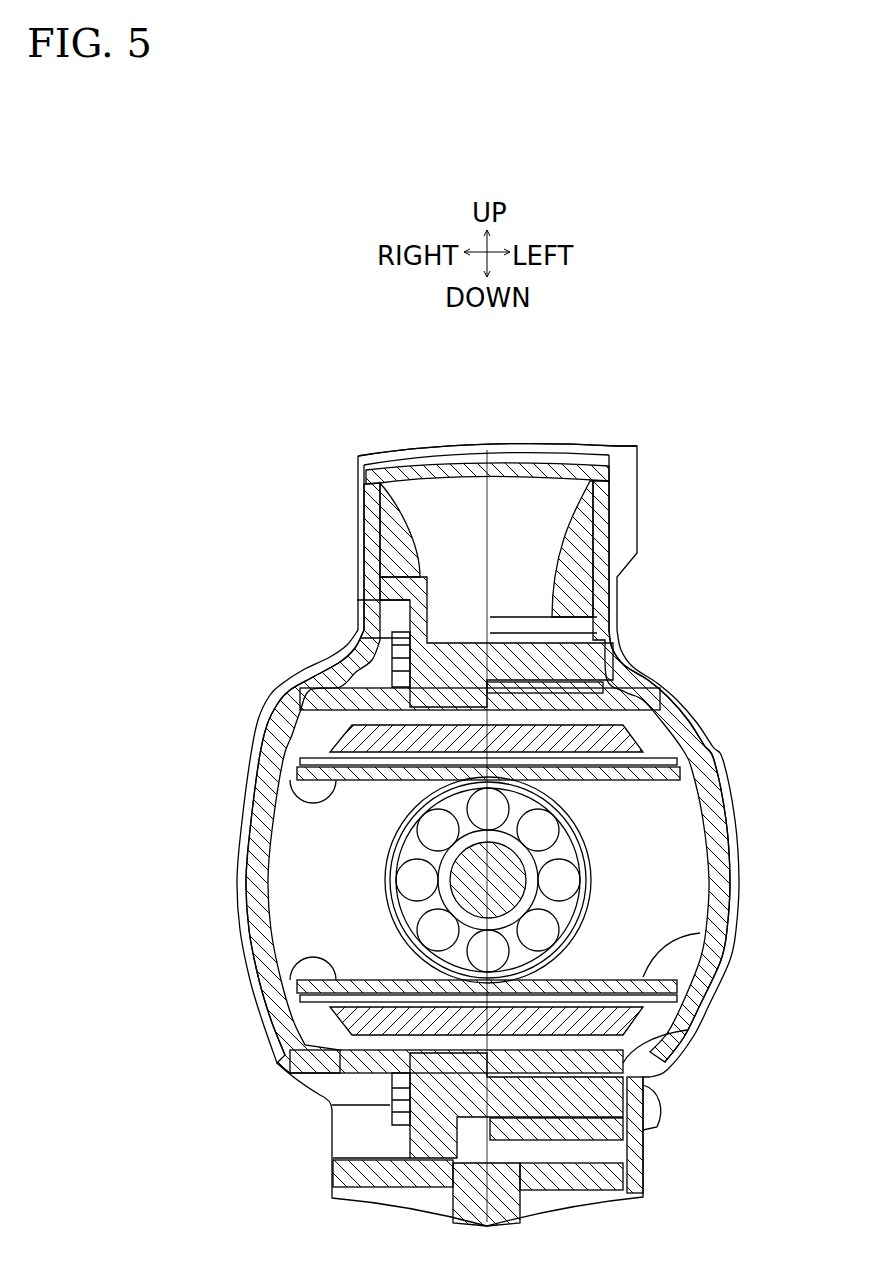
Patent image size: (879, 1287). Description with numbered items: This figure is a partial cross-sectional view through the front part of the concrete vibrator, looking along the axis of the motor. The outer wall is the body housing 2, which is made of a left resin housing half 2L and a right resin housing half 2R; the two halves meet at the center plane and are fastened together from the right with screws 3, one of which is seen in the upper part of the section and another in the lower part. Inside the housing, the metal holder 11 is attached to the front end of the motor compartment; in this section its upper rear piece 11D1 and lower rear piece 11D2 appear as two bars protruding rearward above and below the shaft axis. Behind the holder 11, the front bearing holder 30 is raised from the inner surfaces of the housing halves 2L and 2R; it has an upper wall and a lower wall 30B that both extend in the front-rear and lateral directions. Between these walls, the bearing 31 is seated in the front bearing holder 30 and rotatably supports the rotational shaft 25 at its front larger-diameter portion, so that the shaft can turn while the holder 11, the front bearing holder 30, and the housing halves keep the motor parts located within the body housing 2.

The body housing 2 is at (561, 427).
The right resin housing half 2R is at (410, 448).
The left resin housing half 2L is at (512, 448).
The screw 3 is at (392, 652).
The holder 11 is at (618, 642).
The upper rear piece 11D1 is at (632, 717).
The lower rear piece 11D2 is at (645, 1012).
The front bearing holder 30 is at (335, 782).
The lower wall 30B is at (700, 933).
The bearing 31 is at (436, 831).
The rotational shaft 25 is at (488, 880).